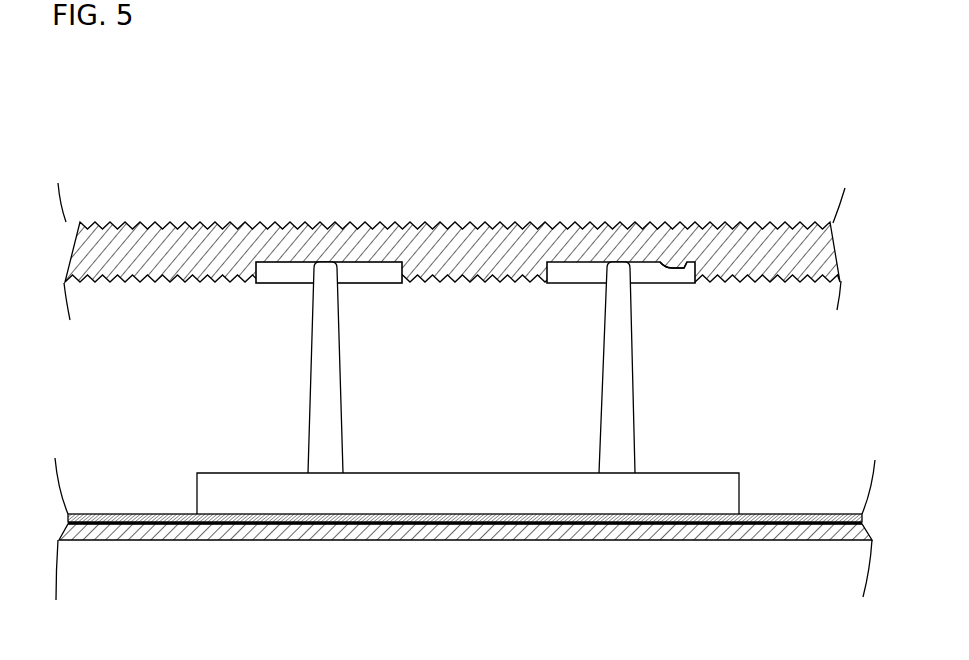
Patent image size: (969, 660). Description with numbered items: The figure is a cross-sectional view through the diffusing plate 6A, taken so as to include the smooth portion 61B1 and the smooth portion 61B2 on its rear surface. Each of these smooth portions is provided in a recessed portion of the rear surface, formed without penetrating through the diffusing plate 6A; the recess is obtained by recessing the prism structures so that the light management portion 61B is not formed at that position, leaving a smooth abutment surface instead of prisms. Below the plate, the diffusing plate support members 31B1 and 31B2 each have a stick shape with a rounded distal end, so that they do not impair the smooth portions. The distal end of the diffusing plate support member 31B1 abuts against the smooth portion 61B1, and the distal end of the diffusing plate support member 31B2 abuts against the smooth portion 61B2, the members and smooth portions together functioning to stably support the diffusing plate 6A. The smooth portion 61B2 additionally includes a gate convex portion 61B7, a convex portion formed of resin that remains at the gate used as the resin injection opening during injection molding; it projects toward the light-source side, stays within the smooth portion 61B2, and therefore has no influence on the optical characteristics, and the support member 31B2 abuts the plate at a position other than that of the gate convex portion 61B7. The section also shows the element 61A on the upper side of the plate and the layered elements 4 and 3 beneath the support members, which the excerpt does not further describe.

The diffusing plate 6A is at (330, 185).
The upper surface of cover member 61A is at (103, 222).
The light management portion 61B is at (103, 282).
The smooth portion 61B1 is at (299, 268).
The smooth portion 61B2 is at (590, 268).
The gate convex portion 61B7 is at (671, 270).
The diffusing plate support member 31B1 is at (320, 407).
The diffusing plate support member 31B2 is at (614, 409).
The adhesive layer 4 is at (140, 514).
The substrate 3 is at (390, 533).